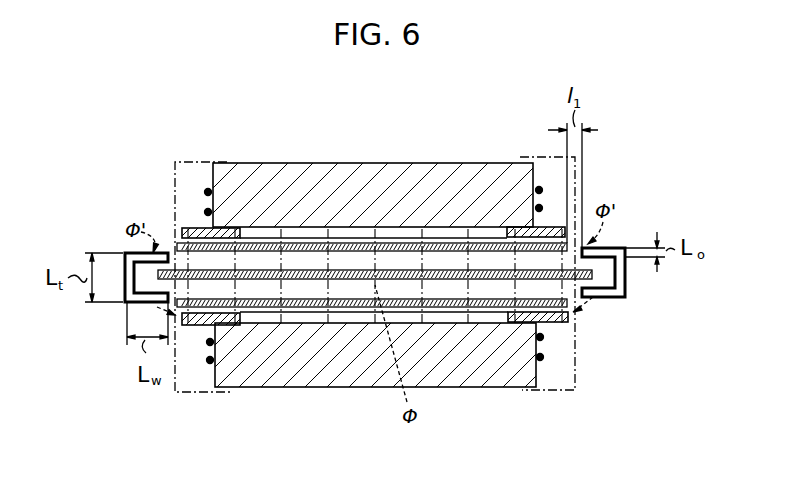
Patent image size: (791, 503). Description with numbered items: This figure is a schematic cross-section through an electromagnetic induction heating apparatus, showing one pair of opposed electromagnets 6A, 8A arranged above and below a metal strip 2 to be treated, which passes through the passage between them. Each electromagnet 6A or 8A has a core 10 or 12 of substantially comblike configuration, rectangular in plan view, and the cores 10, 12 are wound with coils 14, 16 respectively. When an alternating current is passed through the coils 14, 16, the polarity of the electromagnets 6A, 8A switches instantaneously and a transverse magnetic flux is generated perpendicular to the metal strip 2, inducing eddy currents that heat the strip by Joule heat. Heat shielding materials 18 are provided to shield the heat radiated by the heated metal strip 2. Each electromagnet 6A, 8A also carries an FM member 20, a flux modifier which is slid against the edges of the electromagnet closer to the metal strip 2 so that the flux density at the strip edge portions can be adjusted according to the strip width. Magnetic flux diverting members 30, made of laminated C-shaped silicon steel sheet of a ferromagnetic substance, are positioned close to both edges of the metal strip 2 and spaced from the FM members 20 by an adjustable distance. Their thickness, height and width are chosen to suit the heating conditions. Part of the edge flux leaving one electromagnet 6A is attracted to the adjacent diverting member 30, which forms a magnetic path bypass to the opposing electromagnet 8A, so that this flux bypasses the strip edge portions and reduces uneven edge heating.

The metal strip 2 is at (593, 271).
The electromagnet 6A is at (287, 163).
The electromagnet 8A is at (460, 395).
The core 10 is at (465, 163).
The core 12 is at (327, 380).
The coil 14 is at (206, 190).
The coil 16 is at (543, 357).
The heat shielding material 18 is at (391, 243).
The FM member 20 is at (182, 230).
The magnetic flux diverting member 30 is at (126, 287).